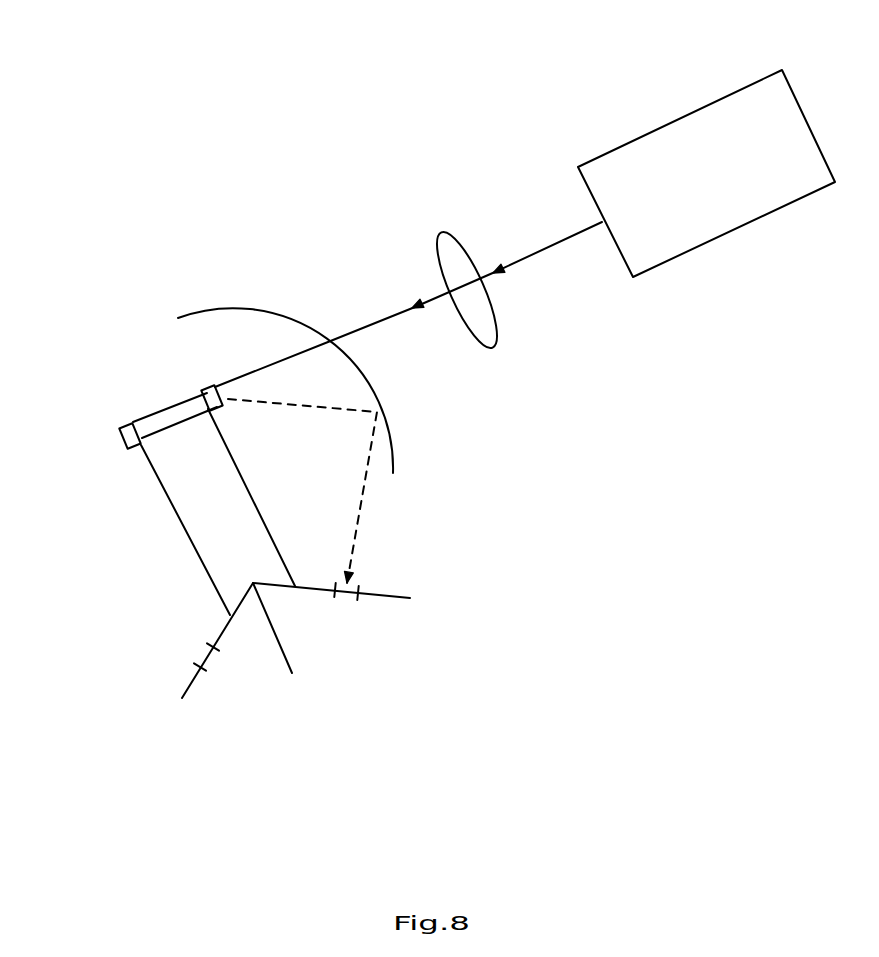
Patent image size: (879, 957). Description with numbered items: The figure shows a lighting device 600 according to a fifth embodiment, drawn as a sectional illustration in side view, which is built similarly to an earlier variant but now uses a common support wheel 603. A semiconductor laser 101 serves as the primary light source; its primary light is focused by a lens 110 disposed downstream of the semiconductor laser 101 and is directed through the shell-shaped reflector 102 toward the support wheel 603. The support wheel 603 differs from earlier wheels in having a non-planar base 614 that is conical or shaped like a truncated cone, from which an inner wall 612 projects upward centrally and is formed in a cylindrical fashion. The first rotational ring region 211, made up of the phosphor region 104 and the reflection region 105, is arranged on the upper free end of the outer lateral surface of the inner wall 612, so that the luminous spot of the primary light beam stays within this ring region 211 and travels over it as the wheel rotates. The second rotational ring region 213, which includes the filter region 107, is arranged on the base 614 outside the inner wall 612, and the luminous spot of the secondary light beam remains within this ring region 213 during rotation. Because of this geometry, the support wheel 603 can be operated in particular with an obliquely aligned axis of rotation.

The lighting device 600 is at (297, 113).
The semiconductor laser 101 is at (645, 182).
The lens 110 is at (452, 253).
The shell-shaped reflector 102 is at (218, 304).
The first rotational ring region 211 is at (163, 412).
The phosphor region 104 is at (205, 387).
The reflection region 105 is at (122, 437).
The common support wheel 603 is at (121, 572).
The inner wall 612 is at (173, 505).
The base 614 is at (313, 588).
The second rotational ring region 213 is at (358, 585).
The filter region 107 is at (277, 591).